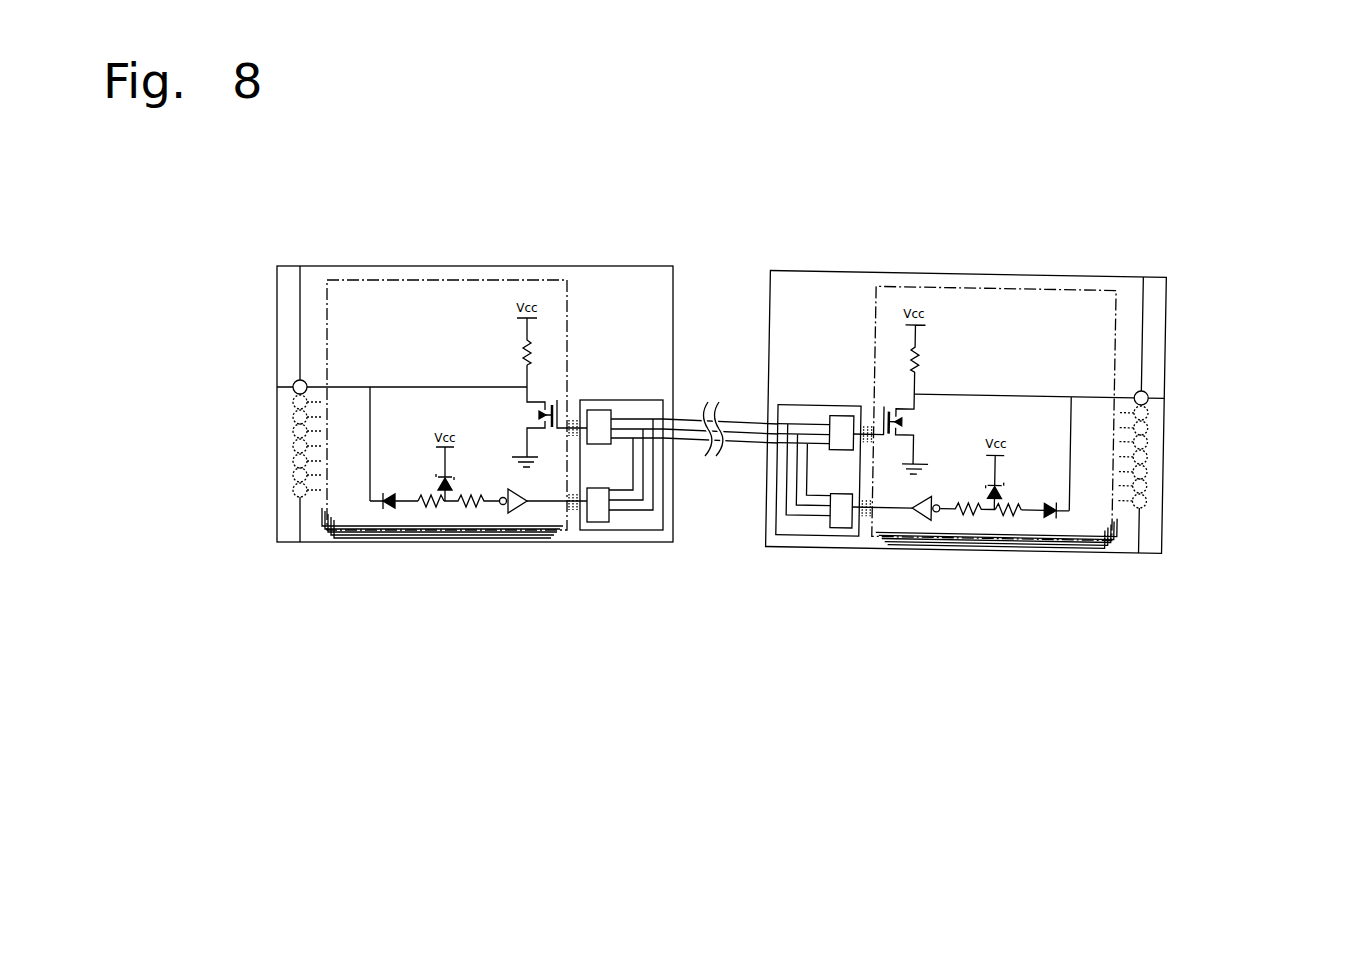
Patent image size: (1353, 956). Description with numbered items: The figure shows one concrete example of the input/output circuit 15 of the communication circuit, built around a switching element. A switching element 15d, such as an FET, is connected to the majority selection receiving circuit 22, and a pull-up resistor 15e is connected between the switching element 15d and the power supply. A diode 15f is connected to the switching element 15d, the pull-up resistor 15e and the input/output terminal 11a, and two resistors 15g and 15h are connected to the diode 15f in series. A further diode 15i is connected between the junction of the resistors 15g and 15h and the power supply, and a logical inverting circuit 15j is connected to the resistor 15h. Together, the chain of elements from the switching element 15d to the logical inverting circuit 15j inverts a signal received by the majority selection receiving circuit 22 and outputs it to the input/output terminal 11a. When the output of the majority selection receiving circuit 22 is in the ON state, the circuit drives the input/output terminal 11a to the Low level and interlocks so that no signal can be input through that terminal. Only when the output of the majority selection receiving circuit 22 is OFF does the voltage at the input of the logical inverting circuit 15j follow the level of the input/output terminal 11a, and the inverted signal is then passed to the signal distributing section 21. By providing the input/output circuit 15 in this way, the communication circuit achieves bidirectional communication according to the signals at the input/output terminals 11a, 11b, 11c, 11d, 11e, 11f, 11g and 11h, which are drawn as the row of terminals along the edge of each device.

The input/output circuit 15 is at (448, 280).
The switching element 15d is at (557, 400).
The pull-up resistor 15e is at (522, 340).
The diode 15f is at (386, 506).
The resistor 15g is at (425, 505).
The resistor 15h is at (446, 503).
The diode 15i is at (465, 505).
The logical inverting circuit 15j is at (515, 508).
The signal distributing section 21 is at (594, 522).
The majority selection receiving circuit 22 is at (612, 410).
The input/output terminal 11a is at (292, 385).
The input/output terminal 11b is at (293, 401).
The input/output terminal 11c is at (293, 416).
The input/output terminal 11d is at (293, 430).
The input/output terminal 11e is at (293, 445).
The input/output terminal 11f is at (293, 460).
The input/output terminal 11g is at (293, 474).
The input/output terminal 11h is at (293, 489).